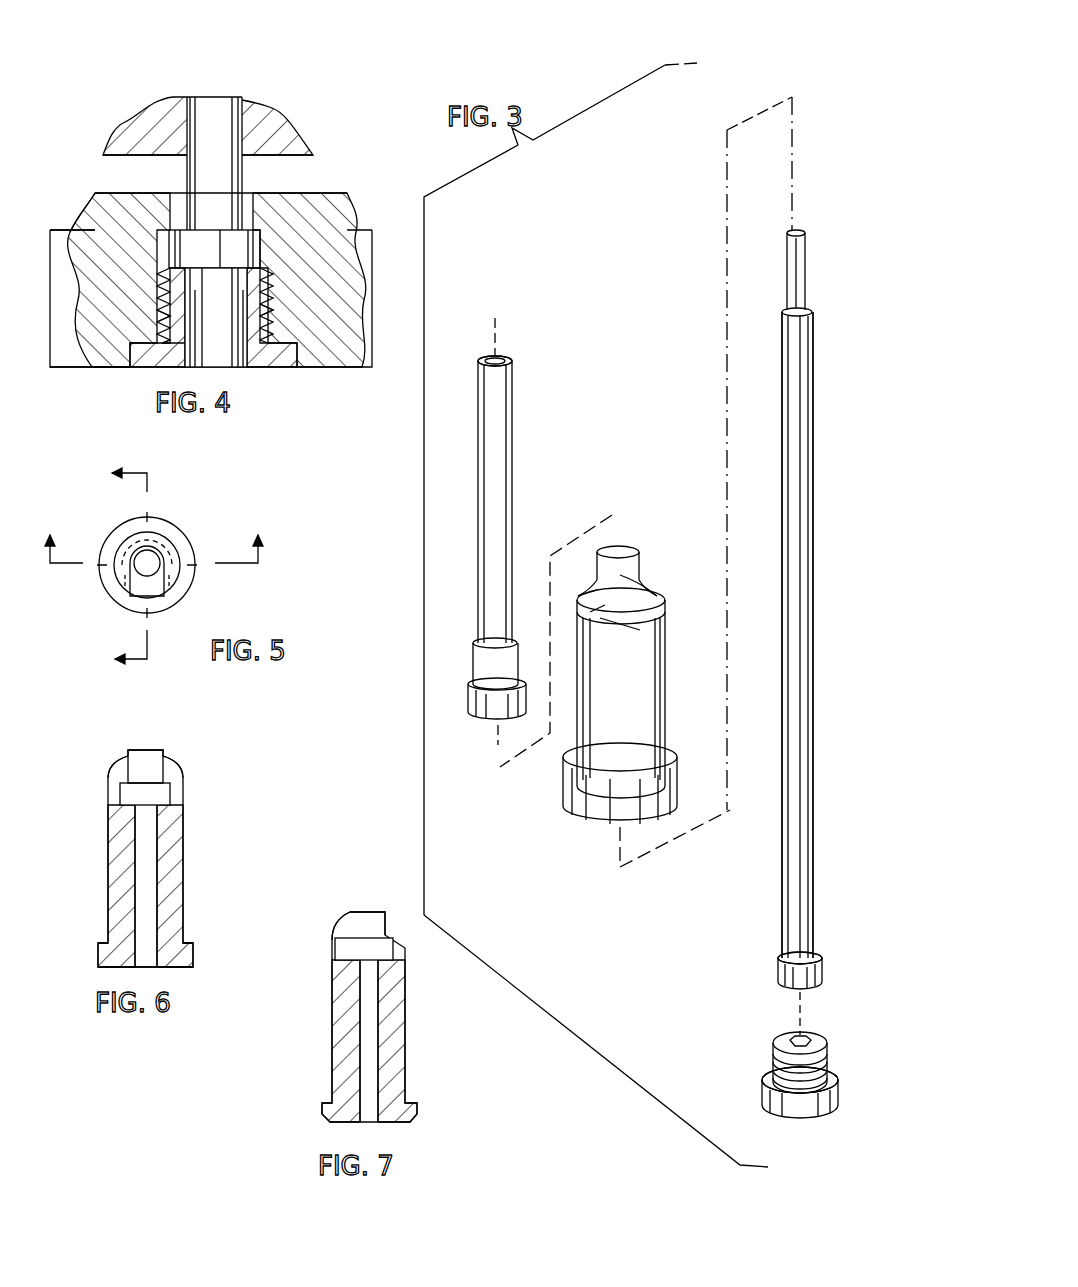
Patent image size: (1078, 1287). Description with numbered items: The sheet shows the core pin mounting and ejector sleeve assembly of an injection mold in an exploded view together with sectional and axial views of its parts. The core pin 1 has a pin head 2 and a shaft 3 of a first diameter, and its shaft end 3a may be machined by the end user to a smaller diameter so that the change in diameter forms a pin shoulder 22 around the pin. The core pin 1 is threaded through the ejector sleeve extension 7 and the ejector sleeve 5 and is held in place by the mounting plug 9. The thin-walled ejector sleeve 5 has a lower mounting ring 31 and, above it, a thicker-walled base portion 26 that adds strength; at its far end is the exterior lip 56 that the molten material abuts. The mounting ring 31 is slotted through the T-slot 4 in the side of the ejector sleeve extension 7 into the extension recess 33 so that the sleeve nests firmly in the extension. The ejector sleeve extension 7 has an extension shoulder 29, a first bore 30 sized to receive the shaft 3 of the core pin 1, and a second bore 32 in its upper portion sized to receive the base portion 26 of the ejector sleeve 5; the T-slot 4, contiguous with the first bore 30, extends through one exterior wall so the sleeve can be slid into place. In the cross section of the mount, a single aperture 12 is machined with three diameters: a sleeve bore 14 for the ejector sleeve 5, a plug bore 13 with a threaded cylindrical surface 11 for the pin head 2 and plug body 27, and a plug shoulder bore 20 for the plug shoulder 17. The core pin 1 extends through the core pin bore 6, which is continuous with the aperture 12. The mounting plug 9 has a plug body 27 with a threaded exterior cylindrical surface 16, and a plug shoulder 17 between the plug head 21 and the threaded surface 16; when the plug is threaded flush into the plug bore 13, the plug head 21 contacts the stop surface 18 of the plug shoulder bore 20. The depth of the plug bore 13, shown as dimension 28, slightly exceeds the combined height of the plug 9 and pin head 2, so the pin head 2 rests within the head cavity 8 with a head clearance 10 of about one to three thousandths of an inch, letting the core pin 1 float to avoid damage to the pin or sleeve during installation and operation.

In FIG. 3, the core pin 1 is at (785, 468).
In FIG. 3, the pin head 2 is at (778, 975).
In FIG. 3, the shaft 3 is at (472, 712).
In FIG. 3, the shaft end 3a is at (790, 248).
In FIG. 5, the T-slot 4 is at (166, 584).
In FIG. 6, the T-slot 4 is at (118, 795).
In FIG. 7, the T-slot 4 is at (332, 945).
In FIG. 3, the T-slot 4 is at (588, 610).
In FIG. 3, the ejector sleeve 5 is at (505, 442).
In FIG. 5, the core pin bore 6 is at (150, 536).
In FIG. 3, the core pin bore 6 is at (782, 955).
In FIG. 5, the ejector sleeve extension 7 is at (138, 567).
In FIG. 6, the ejector sleeve extension 7 is at (118, 898).
In FIG. 7, the ejector sleeve extension 7 is at (408, 1052).
In FIG. 3, the ejector sleeve extension 7 is at (590, 757).
In FIG. 4, the head cavity 8 is at (272, 252).
In FIG. 4, the mounting plug 9 is at (253, 335).
In FIG. 3, the mounting plug 9 is at (827, 1068).
In FIG. 4, the head clearance 10 is at (290, 166).
In FIG. 4, the threaded cylindrical surface 11 is at (262, 262).
In FIG. 4, the single aperture 12 is at (140, 222).
In FIG. 4, the plug bore 13 is at (172, 280).
In FIG. 4, the sleeve bore 14 is at (258, 106).
In FIG. 3, the threaded exterior cylindrical surface 16 is at (775, 1060).
In FIG. 4, the plug shoulder 17 is at (150, 320).
In FIG. 4, the stop surface 18 is at (268, 312).
In FIG. 4, the plug shoulder bore 20 is at (313, 367).
In FIG. 4, the plug head 21 is at (97, 368).
In FIG. 3, the plug head 21 is at (805, 1112).
In FIG. 3, the pin shoulder 22 is at (785, 314).
In FIG. 3, the base portion 26 is at (472, 665).
In FIG. 3, the plug body 27 is at (763, 1108).
In FIG. 4, the dimension 28 is at (50, 236).
In FIG. 6, the extension shoulder 29 is at (190, 955).
In FIG. 3, the extension shoulder 29 is at (600, 805).
In FIG. 5, the first bore 30 is at (155, 558).
In FIG. 6, the first bore 30 is at (168, 903).
In FIG. 7, the first bore 30 is at (362, 1075).
In FIG. 5, the lower mounting ring 31 is at (112, 592).
In FIG. 5, the second bore 32 is at (128, 540).
In FIG. 6, the second bore 32 is at (145, 758).
In FIG. 3, the second bore 32 is at (614, 548).
In FIG. 6, the extension recess 33 is at (162, 790).
In FIG. 7, the extension recess 33 is at (393, 955).
In FIG. 3, the exterior lip 56 is at (502, 358).